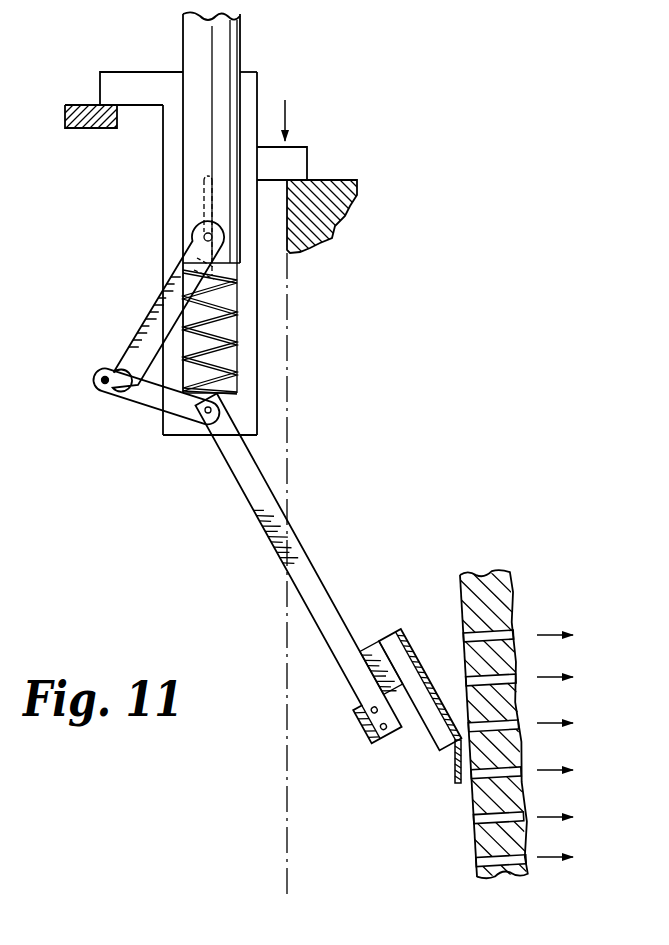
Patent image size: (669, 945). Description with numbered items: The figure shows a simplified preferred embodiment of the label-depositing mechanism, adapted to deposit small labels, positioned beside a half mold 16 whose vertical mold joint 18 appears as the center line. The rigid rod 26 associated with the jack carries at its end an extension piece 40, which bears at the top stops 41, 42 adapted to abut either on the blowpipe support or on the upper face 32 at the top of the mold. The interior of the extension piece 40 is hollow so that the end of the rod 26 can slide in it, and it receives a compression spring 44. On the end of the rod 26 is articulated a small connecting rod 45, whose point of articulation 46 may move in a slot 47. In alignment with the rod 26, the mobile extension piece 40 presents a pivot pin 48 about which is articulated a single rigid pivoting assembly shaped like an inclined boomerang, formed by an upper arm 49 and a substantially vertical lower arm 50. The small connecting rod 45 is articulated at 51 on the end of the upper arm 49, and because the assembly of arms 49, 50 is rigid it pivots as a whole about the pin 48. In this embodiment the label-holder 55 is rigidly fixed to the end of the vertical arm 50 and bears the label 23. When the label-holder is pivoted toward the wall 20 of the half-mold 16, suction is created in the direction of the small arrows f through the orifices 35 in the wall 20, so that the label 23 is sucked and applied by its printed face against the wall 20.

The half mold 16 is at (497, 596).
The vertical mold joint 18 is at (285, 758).
The wall of the half-mold 20 is at (457, 610).
The label 23 is at (455, 774).
The rigid rod 26 is at (232, 33).
The upper face of the half mold 32 is at (346, 184).
The suction orifices 35 is at (500, 822).
The extension piece 40 is at (250, 281).
The stop 41 is at (112, 72).
The stop 42 is at (312, 150).
The compression spring 44 is at (227, 330).
The small connecting rod 45 is at (150, 308).
The point of articulation 46 is at (203, 236).
The slot 47 is at (201, 180).
The pivot pin 48 is at (205, 415).
The upper arm 49 is at (136, 396).
The lower arm 50 is at (250, 506).
The articulation 51 is at (102, 377).
The label-holder 55 is at (399, 637).
The suction direction arrows f is at (540, 723).